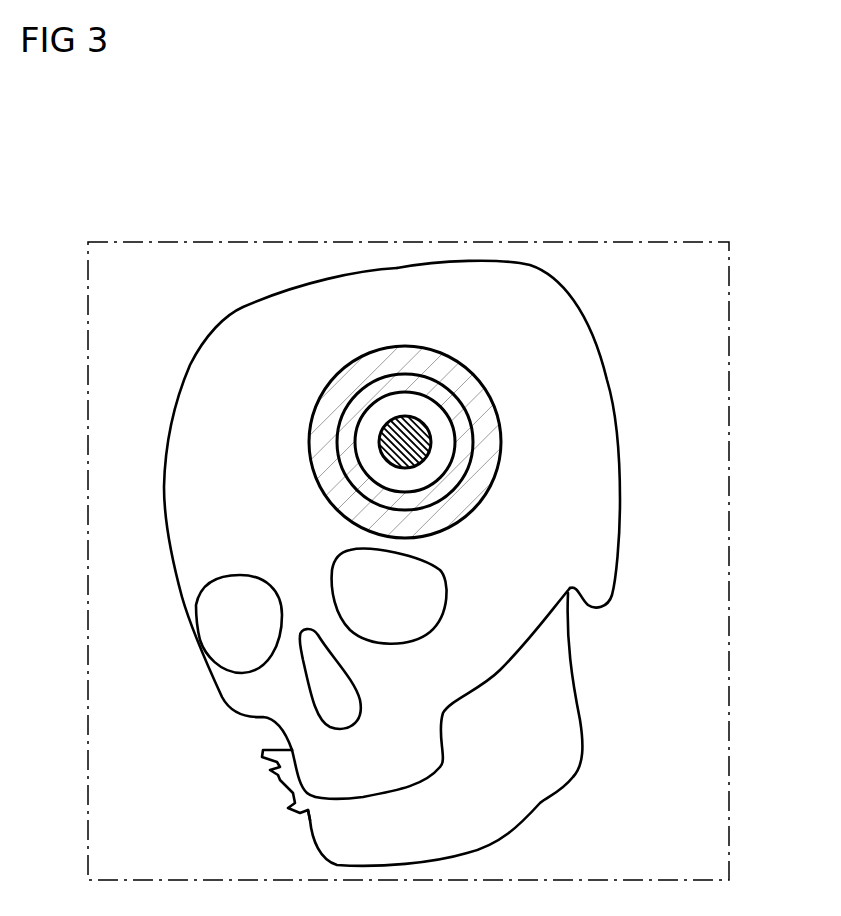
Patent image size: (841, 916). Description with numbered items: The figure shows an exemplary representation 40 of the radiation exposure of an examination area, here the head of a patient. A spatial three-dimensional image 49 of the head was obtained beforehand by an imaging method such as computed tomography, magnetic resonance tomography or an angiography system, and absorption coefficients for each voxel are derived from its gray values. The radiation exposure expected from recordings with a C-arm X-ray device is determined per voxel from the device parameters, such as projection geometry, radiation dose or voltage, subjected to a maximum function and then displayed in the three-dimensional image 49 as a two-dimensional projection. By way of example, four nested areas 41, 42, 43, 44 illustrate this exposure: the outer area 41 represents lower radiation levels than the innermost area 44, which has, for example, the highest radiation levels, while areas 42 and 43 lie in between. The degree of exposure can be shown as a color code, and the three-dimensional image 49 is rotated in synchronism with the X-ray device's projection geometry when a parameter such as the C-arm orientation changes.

The representation 40 is at (198, 184).
The 3D image 49 is at (553, 332).
The area 41 is at (492, 415).
The area 42 is at (352, 410).
The area 43 is at (437, 415).
The area 44 is at (407, 427).